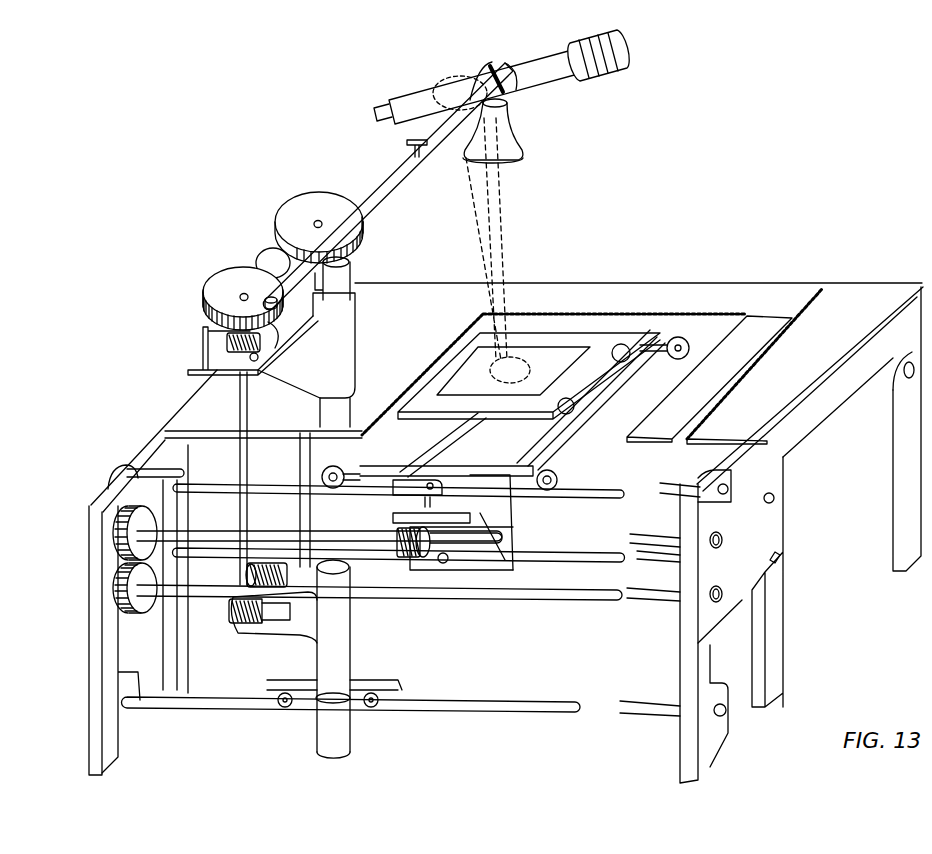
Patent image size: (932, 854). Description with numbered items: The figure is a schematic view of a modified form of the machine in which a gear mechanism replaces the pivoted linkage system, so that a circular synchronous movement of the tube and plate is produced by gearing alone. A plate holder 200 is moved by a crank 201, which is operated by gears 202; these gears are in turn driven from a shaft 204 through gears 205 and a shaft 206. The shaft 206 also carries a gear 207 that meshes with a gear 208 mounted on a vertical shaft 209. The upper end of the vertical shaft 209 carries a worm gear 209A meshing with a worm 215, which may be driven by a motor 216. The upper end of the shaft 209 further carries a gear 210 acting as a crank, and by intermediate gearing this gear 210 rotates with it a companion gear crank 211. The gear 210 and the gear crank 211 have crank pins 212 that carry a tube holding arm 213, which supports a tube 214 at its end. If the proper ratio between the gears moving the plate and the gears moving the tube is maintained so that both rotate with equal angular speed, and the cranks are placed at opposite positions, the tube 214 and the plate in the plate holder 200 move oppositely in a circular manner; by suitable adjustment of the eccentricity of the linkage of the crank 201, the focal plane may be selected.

The plate holder 200 is at (567, 337).
The crank 201 is at (402, 497).
The gears 202 is at (397, 531).
The shaft 204 is at (283, 531).
The gears 205 is at (107, 553).
The shaft 206 is at (474, 591).
The gear 207 is at (250, 572).
The gear 208 is at (232, 615).
The vertical shaft 209 is at (243, 473).
The worm gear 209A is at (230, 340).
The gear 210 is at (202, 294).
The companion gear crank 211 is at (303, 210).
The crank pins 212 is at (343, 221).
The tube holding arm 213 is at (390, 181).
The tube 214 is at (552, 75).
The worm 215 is at (262, 350).
The motor 216 is at (284, 329).